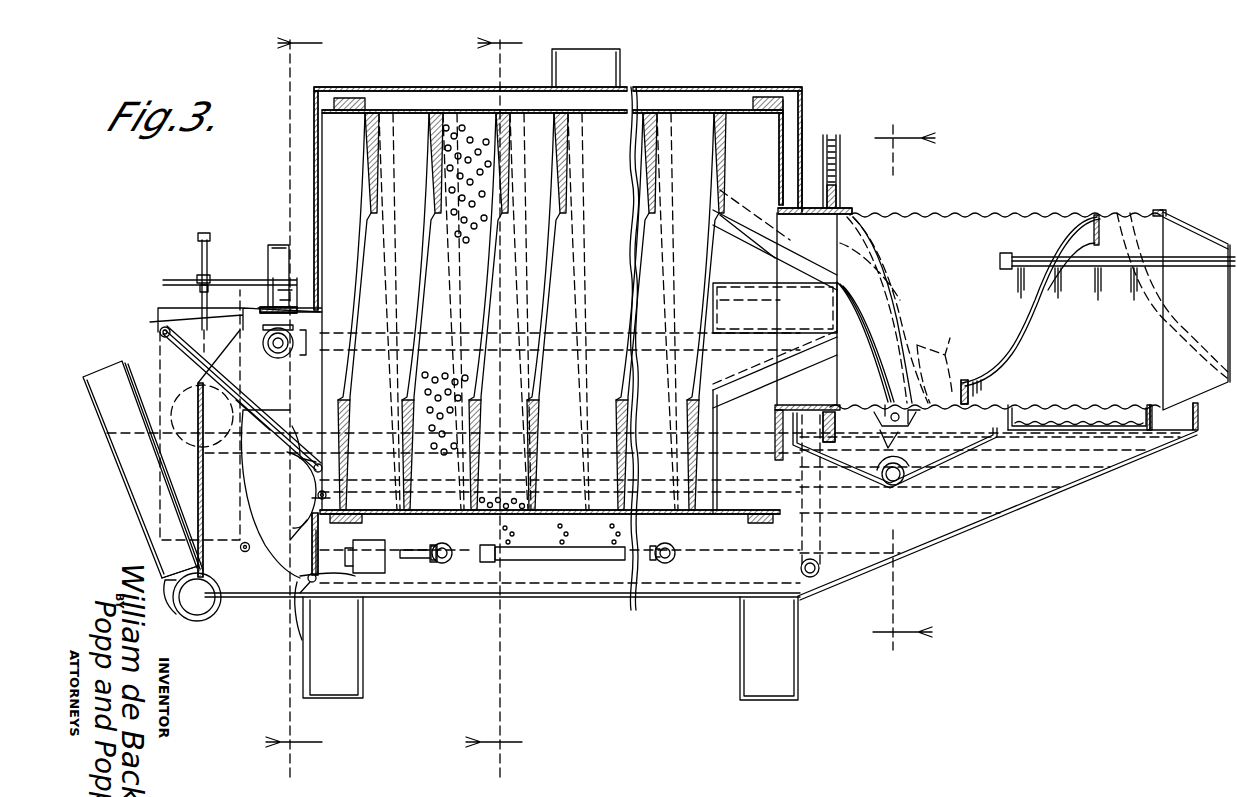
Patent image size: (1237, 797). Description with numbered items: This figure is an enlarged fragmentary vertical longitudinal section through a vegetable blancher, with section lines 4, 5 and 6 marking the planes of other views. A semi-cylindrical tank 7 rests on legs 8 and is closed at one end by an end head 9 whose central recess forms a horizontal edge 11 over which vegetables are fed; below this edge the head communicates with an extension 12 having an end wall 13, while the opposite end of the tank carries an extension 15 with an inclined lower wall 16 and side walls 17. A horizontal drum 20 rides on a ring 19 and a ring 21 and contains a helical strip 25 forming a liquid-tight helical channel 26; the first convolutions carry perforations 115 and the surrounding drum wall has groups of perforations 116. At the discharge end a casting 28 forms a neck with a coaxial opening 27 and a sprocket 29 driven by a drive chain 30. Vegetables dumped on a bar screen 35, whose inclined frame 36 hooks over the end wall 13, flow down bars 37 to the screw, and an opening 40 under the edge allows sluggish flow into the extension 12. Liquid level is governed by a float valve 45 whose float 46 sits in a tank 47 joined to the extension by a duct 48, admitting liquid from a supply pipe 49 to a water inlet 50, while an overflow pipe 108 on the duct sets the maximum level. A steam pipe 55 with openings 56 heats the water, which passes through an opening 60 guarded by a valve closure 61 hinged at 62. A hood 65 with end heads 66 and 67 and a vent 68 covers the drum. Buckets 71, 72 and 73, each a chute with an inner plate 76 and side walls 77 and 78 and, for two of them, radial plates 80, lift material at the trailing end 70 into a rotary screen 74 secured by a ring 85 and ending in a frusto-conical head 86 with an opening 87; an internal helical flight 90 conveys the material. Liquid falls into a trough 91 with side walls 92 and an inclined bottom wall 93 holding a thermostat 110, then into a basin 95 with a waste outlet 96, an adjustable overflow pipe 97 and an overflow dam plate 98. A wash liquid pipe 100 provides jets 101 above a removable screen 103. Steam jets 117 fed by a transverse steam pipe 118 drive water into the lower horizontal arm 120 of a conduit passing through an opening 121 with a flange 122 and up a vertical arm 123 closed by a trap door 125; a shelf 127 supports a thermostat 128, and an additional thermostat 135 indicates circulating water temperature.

The section line 4- 4 is at (494, 400).
The section line 5- 5 is at (297, 400).
The section line 6- 6 is at (904, 388).
The tank 7 is at (632, 358).
The legs 8 is at (358, 668).
The end head 9 is at (300, 518).
The horizontal edge 11 is at (257, 453).
The extension 12 is at (188, 486).
The end wall 13 is at (197, 457).
The extension 15 is at (1000, 526).
The inclined lower wall 16 is at (1078, 486).
The side walls 17 is at (1025, 478).
The metal tire or ring 19 is at (765, 97).
The drum 20 is at (705, 96).
The ring or tire 21 is at (345, 98).
The helical strip 25 is at (482, 290).
The helical channel 26 is at (690, 405).
The coaxial opening 27 is at (775, 245).
The circular concentric casting 28 is at (865, 310).
The sprocket 29 is at (838, 182).
The drive chain 30 is at (842, 145).
The bar screen 35 is at (273, 368).
The inclined frame 36 is at (160, 328).
The bars 37 is at (245, 372).
The opening 40 is at (290, 480).
The float valve 45 is at (258, 325).
The float 46 is at (170, 360).
The tank 47 is at (175, 308).
The duct 48 is at (180, 616).
The supply pipe 49 is at (280, 245).
The water inlet 50 is at (815, 578).
The steam pipe 55 is at (625, 558).
The openings 56 is at (520, 556).
The opening 60 is at (318, 592).
The valve closure 61 is at (304, 640).
The hinge 62 is at (345, 592).
The semi-circular hood 65 is at (655, 87).
The end head 66 is at (314, 150).
The end head 67 is at (802, 122).
The vent 68 is at (582, 48).
The trailing end 70 is at (710, 168).
The bucket 71 is at (725, 409).
The bucket 72 is at (712, 308).
The bucket 73 is at (738, 238).
The rotary screen 74 is at (1034, 203).
The inner plate 76 is at (790, 103).
The side wall 77 is at (775, 369).
The side wall 78 is at (744, 158).
The radial plates 80 is at (718, 440).
The ring 85 is at (840, 198).
The sheet metal head 86 is at (1178, 218).
The opening 87 is at (1228, 310).
The internal helical flight 90 is at (1012, 352).
The transverse trough 91 is at (932, 426).
The side walls 92 is at (876, 420).
The inclined bottom wall 93 is at (885, 425).
The discharge basin 95 is at (940, 470).
The waste outlet 96 is at (896, 482).
The adjustable overflow pipe 97 is at (945, 345).
The plate 98 is at (985, 386).
The wash liquid pipe 100 is at (1172, 268).
The downward jets 101 is at (1135, 290).
The removable screen 103 is at (1090, 420).
The overflow pipe 108 is at (108, 370).
The thermostat 110 is at (878, 408).
The perforations 115 is at (368, 190).
The groups of perforations 116 is at (470, 178).
The steam jets 117 is at (412, 550).
The transverse steam pipe 118 is at (462, 540).
The lower horizontal arm 120 is at (385, 565).
The opening 121 is at (298, 552).
The flange 122 is at (334, 544).
The vertical arm 123 is at (256, 500).
The trap door 125 is at (292, 426).
The shelf 127 is at (330, 497).
The thermostat 128 is at (305, 458).
The additional thermostat 135 is at (246, 552).